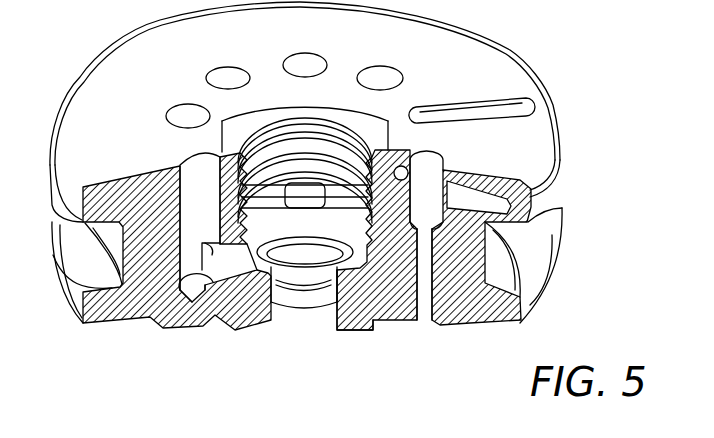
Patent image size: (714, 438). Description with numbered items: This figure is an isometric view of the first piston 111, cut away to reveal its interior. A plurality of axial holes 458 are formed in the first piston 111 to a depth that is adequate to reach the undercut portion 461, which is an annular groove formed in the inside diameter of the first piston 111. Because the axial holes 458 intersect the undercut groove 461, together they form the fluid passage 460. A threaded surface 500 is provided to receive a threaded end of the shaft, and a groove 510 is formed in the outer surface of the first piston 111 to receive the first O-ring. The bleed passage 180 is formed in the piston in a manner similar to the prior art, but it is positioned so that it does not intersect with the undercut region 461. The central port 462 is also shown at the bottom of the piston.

The first piston 111 is at (500, 62).
The axial holes 458 is at (228, 74).
The threaded surface 500 is at (287, 130).
The groove 510 is at (548, 228).
The fluid passage 460 is at (200, 302).
The central port 462 is at (310, 264).
The undercut portion 461 is at (365, 283).
The bleed passage 180 is at (424, 310).